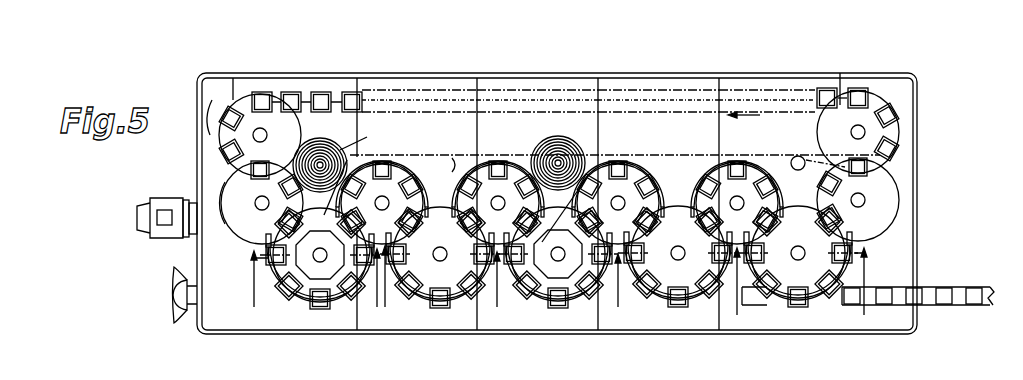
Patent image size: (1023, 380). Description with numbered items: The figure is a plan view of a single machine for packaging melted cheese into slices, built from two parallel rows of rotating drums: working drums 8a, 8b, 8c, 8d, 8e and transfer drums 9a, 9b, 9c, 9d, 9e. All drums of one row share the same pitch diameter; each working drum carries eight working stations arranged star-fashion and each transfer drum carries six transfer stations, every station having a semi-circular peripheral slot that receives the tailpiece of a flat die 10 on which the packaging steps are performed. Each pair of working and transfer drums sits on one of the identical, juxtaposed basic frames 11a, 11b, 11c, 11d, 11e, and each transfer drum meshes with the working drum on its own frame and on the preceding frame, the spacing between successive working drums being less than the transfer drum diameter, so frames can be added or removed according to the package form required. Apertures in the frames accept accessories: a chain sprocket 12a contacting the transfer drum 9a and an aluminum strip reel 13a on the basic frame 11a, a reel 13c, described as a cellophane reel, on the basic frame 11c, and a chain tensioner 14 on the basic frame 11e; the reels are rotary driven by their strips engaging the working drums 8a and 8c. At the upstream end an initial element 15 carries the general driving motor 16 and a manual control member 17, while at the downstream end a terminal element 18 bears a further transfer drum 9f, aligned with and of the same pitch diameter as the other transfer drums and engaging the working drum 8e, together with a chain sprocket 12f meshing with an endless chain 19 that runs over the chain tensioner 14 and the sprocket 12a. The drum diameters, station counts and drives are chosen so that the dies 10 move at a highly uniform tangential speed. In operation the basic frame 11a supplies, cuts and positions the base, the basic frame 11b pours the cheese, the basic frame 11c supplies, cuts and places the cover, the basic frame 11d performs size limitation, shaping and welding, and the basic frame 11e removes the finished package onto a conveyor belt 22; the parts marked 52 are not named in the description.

The initial element 15 is at (207, 83).
The basic frame 11a is at (290, 83).
The basic frame 11b is at (410, 83).
The basic frame 11c is at (533, 83).
The basic frame 11d is at (648, 84).
The basic frame 11e is at (769, 82).
The endless chain 19 is at (744, 96).
The terminal element 18 is at (902, 84).
The flat die 10 is at (900, 114).
The chain sprocket 12a is at (291, 118).
The chain sprocket 12f is at (893, 131).
The aluminum strip reel 13a is at (370, 133).
The take-up spool 13c is at (574, 146).
The transfer drum 9a is at (239, 199).
The transfer drum 9b is at (403, 166).
The transfer drum 9c is at (511, 166).
The transfer drum 9d is at (645, 166).
The transfer drum 9e is at (762, 166).
The transfer drum 9f is at (885, 186).
The working drum 8a is at (304, 302).
The working drum 8b is at (421, 300).
The working drum 8c is at (545, 298).
The working drum 8d is at (661, 300).
The working drum 8e is at (788, 298).
The guide 52 is at (450, 170).
The chain tensioner 14 is at (799, 156).
The general driving motor 16 is at (181, 200).
The manual control member 17 is at (181, 283).
The conveyor belt 22 is at (935, 288).